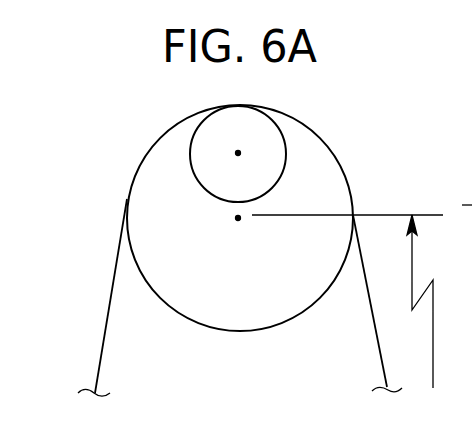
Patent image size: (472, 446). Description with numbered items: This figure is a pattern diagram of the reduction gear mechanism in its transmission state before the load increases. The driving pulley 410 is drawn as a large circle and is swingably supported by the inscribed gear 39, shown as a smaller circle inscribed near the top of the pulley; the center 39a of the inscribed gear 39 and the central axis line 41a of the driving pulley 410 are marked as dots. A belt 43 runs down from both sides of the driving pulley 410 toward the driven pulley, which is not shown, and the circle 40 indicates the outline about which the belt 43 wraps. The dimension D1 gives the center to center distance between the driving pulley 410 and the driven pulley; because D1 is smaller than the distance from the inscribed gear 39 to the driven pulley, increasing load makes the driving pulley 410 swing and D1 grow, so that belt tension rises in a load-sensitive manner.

The inscribed gear 39 is at (190, 153).
The roller axis center 39a is at (238, 153).
The large roller 40 is at (127, 198).
The central axis line 41a is at (238, 222).
The driving pulley 410 is at (122, 247).
The belt 43 is at (103, 330).
The center to center distance D1 is at (362, 314).